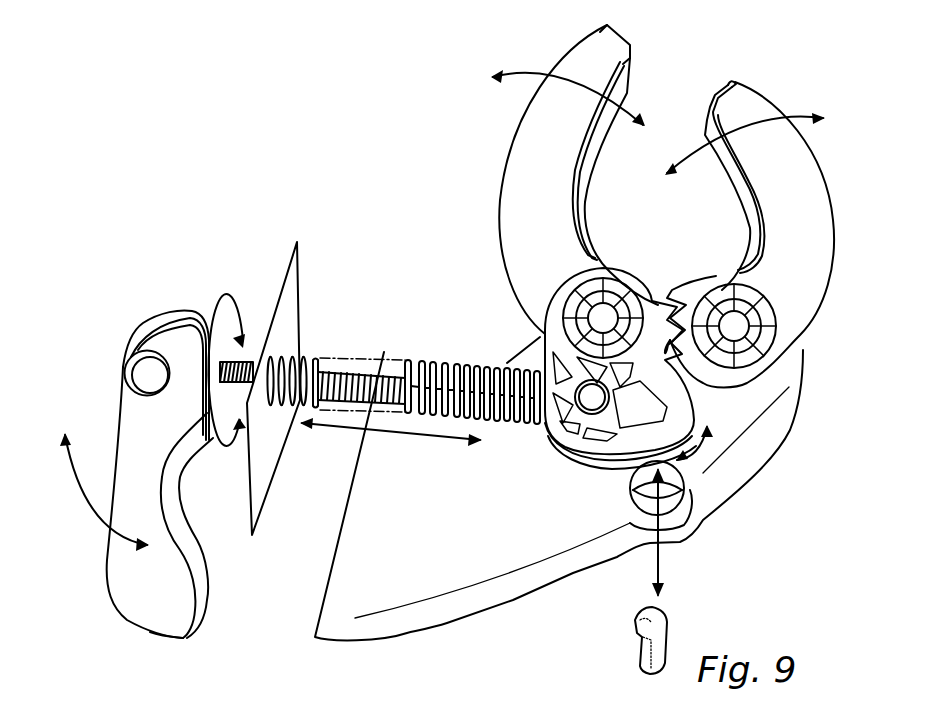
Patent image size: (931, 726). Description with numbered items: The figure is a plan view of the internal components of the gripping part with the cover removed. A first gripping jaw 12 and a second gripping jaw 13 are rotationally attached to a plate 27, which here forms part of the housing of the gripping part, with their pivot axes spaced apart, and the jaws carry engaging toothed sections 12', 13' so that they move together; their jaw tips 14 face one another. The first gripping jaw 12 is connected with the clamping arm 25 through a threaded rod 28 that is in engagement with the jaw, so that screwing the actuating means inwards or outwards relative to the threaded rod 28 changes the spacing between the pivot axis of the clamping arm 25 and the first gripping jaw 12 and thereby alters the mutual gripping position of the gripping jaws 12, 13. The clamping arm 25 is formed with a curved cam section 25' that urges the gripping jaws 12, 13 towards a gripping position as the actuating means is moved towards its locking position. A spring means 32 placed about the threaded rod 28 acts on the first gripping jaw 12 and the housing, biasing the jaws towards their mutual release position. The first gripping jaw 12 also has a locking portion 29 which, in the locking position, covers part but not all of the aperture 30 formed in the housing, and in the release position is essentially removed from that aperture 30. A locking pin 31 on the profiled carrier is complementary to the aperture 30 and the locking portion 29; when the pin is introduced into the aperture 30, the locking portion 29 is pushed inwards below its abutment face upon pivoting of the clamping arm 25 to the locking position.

The first gripping jaw 12 is at (564, 194).
The second gripping jaw 13 is at (761, 235).
The jaw tips 14 is at (707, 137).
The toothed section 12' is at (620, 349).
The toothed section 13' is at (720, 305).
The clamping arm 25 is at (160, 506).
The curved cam section 25' is at (240, 346).
The plate 27 is at (497, 570).
The threaded rod 28 is at (360, 380).
The locking portion 29 is at (683, 448).
The aperture 30 is at (695, 492).
The locking pin 31 is at (667, 613).
The spring means 32 is at (462, 365).